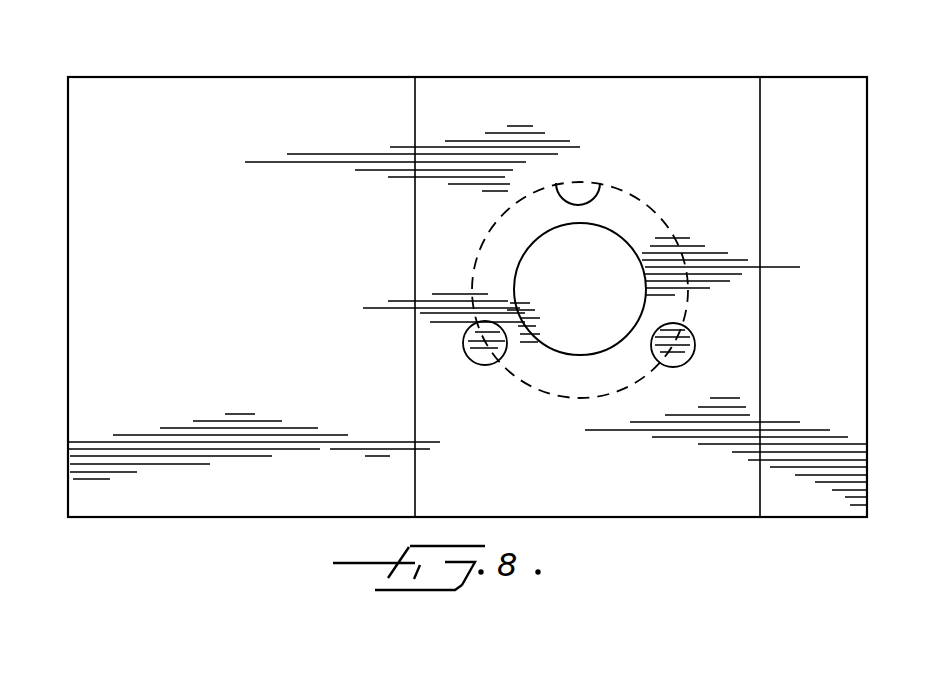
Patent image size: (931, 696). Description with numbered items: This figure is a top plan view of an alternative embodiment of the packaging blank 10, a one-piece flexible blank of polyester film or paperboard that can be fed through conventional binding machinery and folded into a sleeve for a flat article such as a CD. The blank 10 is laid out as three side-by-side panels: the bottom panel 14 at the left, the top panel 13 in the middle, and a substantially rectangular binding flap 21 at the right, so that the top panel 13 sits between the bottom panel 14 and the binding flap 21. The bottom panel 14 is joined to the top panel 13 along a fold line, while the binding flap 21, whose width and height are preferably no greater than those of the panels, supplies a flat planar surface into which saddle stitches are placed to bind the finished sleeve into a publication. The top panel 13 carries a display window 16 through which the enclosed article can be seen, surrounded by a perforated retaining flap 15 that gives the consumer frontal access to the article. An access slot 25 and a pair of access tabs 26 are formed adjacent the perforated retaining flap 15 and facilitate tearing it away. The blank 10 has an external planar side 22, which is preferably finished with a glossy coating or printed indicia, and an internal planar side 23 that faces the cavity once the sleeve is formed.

The packaging blank 10 is at (199, 74).
The top panel 13 is at (660, 107).
The bottom panel 14 is at (322, 105).
The binding flap 21 is at (813, 92).
The retaining flap 15 is at (652, 245).
The display window 16 is at (542, 263).
The access slot 25 is at (584, 202).
The access tab 26 is at (495, 346).
The external planar side 22 is at (223, 522).
The internal planar side 23 is at (146, 484).